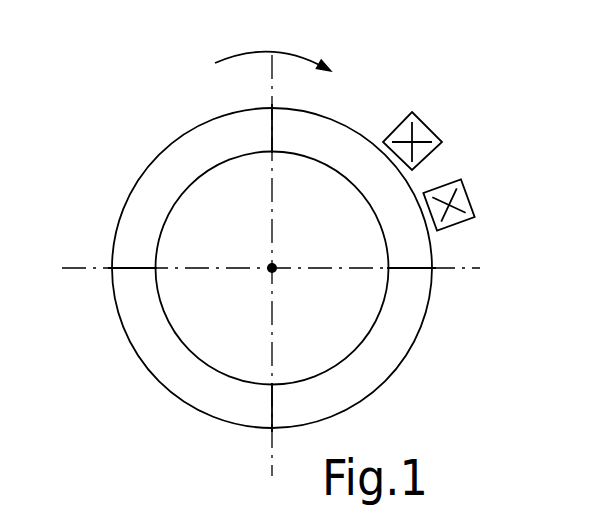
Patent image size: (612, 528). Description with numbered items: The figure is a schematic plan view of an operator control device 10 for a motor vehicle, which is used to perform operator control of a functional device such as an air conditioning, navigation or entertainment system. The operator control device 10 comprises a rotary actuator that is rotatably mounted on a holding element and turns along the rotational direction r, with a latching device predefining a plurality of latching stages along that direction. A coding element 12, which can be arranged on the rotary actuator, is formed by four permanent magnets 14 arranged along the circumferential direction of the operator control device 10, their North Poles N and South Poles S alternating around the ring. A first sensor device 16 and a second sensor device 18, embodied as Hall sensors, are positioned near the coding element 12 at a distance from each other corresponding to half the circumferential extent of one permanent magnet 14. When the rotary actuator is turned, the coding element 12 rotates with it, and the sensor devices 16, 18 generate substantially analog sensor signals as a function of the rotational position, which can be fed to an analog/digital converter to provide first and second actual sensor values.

The operator control device 10 is at (242, 225).
The coding element 12 is at (242, 268).
The permanent magnets 14 is at (157, 372).
The first sensor device 16 is at (430, 125).
The second sensor device 18 is at (468, 195).
The rotational direction r is at (262, 51).